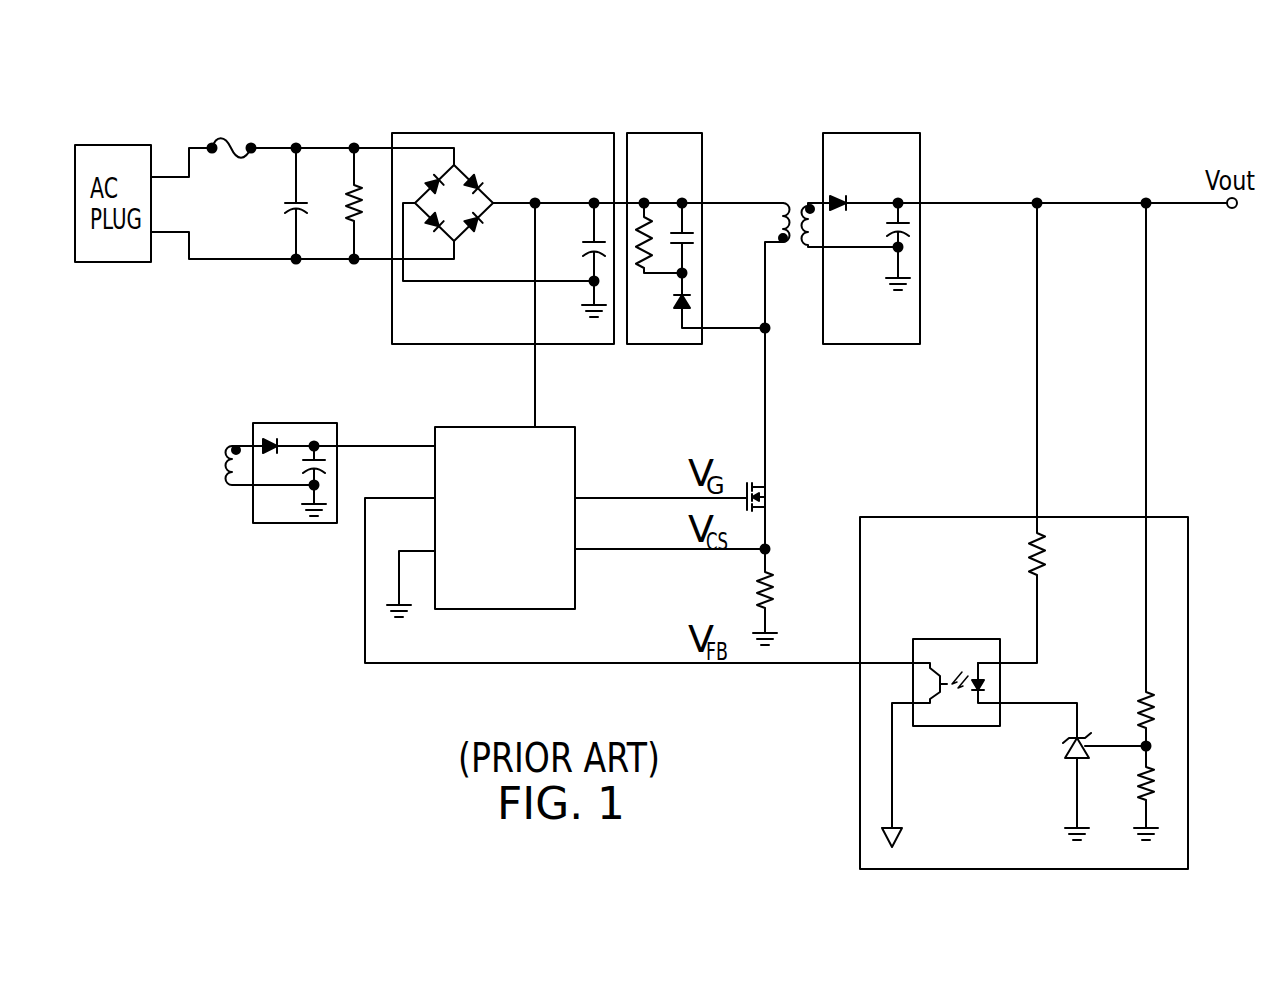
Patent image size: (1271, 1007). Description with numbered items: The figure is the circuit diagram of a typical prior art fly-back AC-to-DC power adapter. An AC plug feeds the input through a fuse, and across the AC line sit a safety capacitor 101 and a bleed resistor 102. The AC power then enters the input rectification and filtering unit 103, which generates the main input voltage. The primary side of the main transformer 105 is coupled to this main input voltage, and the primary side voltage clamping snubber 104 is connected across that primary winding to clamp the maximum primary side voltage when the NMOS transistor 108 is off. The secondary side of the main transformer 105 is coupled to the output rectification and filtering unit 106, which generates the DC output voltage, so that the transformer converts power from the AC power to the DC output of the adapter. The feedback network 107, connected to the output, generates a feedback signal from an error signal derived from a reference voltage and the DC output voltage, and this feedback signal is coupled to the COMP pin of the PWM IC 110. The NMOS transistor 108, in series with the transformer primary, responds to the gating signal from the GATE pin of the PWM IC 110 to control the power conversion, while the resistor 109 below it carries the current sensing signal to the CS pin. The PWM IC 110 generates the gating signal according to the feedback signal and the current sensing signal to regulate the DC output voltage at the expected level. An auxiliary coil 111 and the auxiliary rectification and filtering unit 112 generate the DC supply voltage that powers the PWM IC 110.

The safety capacitor 101 is at (289, 200).
The bleed resistor 102 is at (350, 186).
The input rectification and filtering unit 103 is at (512, 133).
The primary side voltage clamping snubber 104 is at (673, 133).
The main transformer 105 is at (797, 198).
The output rectification and filtering unit 106 is at (873, 133).
The feedback network 107 is at (1163, 517).
The NMOS transistor 108 is at (766, 490).
The resistor 109 is at (752, 584).
The PWM IC 110 is at (470, 427).
The auxiliary coil 111 is at (230, 450).
The auxiliary rectification and filtering unit 112 is at (292, 423).